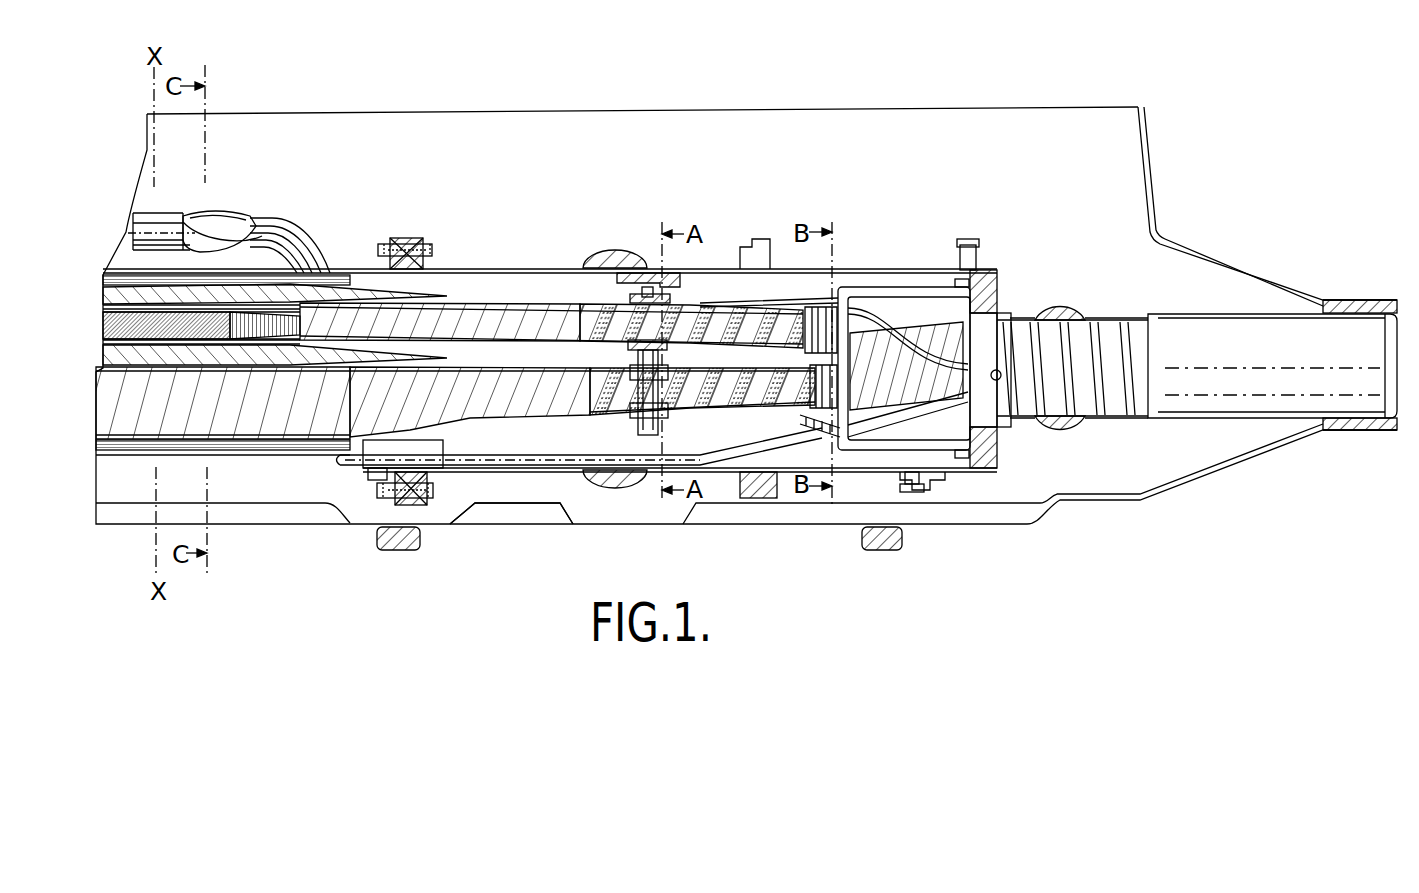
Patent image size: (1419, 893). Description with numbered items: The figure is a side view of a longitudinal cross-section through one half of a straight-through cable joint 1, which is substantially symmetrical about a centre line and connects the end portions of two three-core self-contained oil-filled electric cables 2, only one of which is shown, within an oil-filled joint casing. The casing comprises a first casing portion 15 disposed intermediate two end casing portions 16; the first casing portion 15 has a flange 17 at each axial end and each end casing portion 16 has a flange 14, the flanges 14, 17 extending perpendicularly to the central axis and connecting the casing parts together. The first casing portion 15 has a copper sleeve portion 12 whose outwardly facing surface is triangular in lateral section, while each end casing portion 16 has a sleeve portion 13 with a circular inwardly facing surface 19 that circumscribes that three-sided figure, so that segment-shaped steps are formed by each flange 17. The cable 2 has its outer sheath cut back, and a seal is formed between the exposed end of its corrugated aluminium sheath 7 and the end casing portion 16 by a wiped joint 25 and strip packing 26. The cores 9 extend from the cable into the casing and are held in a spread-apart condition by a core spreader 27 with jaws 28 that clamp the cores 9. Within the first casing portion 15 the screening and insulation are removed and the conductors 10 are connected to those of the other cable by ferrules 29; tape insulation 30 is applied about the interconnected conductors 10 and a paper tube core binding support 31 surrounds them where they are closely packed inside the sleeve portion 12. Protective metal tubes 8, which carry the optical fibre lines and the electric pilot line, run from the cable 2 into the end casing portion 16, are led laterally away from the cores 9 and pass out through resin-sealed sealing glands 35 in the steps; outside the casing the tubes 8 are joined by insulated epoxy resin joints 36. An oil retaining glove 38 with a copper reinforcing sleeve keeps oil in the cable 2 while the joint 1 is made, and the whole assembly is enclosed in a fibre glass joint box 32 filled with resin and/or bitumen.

The cable joint 1 is at (486, 248).
The three-core self contained oil filled electric cable 2 is at (1123, 314).
The corrugated aluminium sheath 7 is at (1108, 408).
The protective metal tubes 8 is at (704, 300).
The cable cores 9 is at (594, 307).
The conductors 10 is at (133, 340).
The sleeve portion 12 is at (292, 446).
The sleeve portion 13 is at (577, 478).
The flange 14 is at (425, 266).
The first casing portion 15 is at (168, 455).
The end casing portion 16 is at (478, 484).
The flange 17 is at (413, 480).
The inwardly facing surface 19 is at (505, 448).
The wiped joint 25 is at (1043, 312).
The strip packing 26 is at (1066, 314).
The core spreader 27 is at (623, 278).
The jaws 28 is at (640, 288).
The ferrules 29 is at (133, 340).
The tape insulation 30 is at (186, 272).
The paper tube core binding support 31 is at (318, 273).
The fibre glass joint box 32 is at (1284, 298).
The sealing glands 35 is at (365, 458).
The epoxy resin joints 36 is at (208, 262).
The oil retaining glove 38 is at (892, 292).